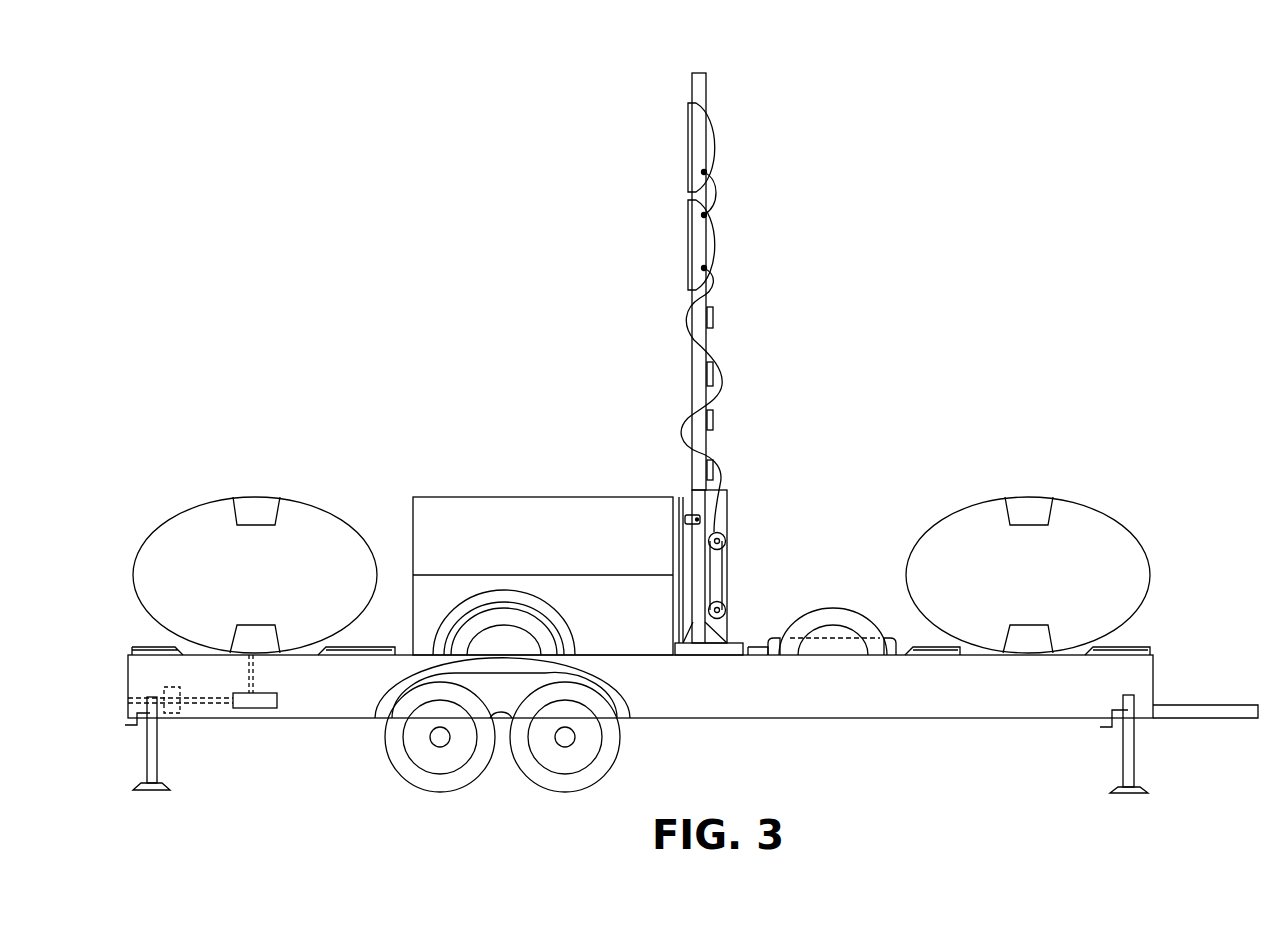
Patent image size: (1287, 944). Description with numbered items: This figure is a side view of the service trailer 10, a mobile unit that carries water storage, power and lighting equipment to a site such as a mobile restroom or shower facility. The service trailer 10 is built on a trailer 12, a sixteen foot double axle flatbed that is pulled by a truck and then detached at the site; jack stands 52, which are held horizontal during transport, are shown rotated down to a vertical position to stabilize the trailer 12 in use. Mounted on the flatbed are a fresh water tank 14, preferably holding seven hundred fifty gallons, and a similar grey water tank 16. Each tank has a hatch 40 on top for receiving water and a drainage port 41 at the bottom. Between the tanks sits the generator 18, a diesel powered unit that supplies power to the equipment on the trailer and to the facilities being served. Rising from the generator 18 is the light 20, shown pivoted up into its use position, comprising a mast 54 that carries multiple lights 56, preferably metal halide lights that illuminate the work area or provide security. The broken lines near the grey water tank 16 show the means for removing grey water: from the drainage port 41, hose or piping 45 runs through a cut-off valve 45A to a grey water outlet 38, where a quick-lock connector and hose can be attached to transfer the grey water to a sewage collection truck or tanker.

The service trailer 10 is at (445, 360).
The trailer 12 is at (1140, 672).
The fresh water tank 14 is at (1039, 585).
The grey water tank 16 is at (265, 585).
The generator 18 is at (547, 549).
The light 20 is at (655, 300).
The grey water outlet 38 is at (128, 698).
The fresh water intake hatch 40 is at (234, 500).
The drainage port 41 is at (232, 640).
The hose or piping 45 is at (215, 703).
The cut-off valve 45A is at (172, 713).
The jack stands 52 is at (1137, 752).
The mast 54 is at (713, 318).
The lights 56 is at (712, 140).